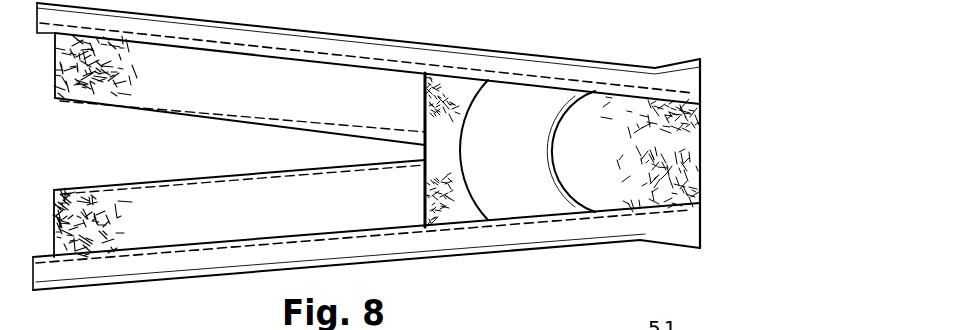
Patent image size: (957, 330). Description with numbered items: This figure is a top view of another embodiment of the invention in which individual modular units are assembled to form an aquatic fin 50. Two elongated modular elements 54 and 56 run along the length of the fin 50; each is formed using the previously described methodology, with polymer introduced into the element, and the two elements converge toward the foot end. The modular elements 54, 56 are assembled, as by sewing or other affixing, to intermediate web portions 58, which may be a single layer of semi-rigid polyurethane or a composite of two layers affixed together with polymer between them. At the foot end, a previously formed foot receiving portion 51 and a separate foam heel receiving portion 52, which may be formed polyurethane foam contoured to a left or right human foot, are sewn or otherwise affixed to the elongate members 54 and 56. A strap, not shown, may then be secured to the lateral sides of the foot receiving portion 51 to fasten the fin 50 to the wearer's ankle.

The aquatic fin 50 is at (435, 163).
The foot receiving portion 51 is at (512, 162).
The heel receiving portion 52 is at (660, 157).
The modular element 54 is at (303, 30).
The modular element 56 is at (202, 272).
The intermediate web portion 58 is at (244, 93).